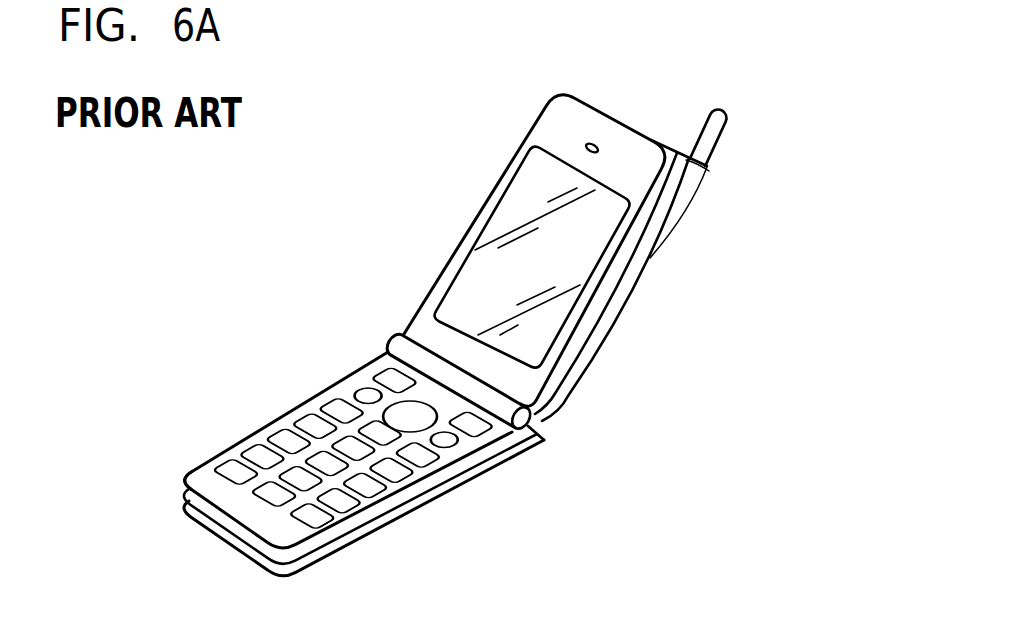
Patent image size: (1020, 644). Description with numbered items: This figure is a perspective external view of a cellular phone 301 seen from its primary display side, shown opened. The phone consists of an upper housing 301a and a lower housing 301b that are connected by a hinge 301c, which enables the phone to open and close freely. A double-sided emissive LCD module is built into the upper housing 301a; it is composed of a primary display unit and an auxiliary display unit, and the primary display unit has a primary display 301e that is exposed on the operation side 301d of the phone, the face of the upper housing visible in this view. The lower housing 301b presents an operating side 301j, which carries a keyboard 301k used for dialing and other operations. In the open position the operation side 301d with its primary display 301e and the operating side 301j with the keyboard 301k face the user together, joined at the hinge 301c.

The cellular phone 301 is at (758, 172).
The upper housing 301a is at (621, 121).
The lower housing 301b is at (437, 490).
The hinge 301c is at (523, 420).
The operation side 301d is at (563, 127).
The primary display 301e is at (493, 273).
The operating side 301j is at (203, 481).
The keyboard 301k is at (310, 428).